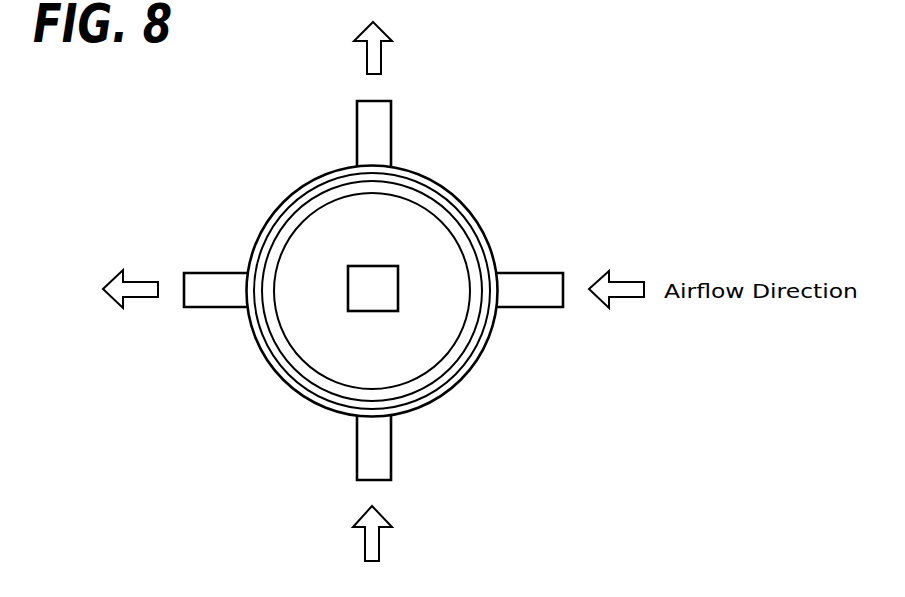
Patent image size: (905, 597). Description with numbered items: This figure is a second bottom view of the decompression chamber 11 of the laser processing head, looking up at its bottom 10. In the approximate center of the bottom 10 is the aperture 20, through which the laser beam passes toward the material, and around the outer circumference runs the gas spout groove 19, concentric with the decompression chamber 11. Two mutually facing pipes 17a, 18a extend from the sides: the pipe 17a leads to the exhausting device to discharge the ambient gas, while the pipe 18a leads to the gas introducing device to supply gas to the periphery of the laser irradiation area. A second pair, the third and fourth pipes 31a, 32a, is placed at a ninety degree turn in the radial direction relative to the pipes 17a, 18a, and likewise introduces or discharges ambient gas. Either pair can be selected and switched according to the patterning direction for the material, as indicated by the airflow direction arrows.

The bottom 10 is at (433, 238).
The decompression chamber 11 is at (453, 190).
The gas spout groove 19 is at (454, 369).
The aperture 20 is at (383, 266).
The pipe 17a is at (197, 272).
The pipe 18a is at (530, 272).
The third pipe 31a is at (357, 130).
The fourth pipe 32a is at (357, 455).